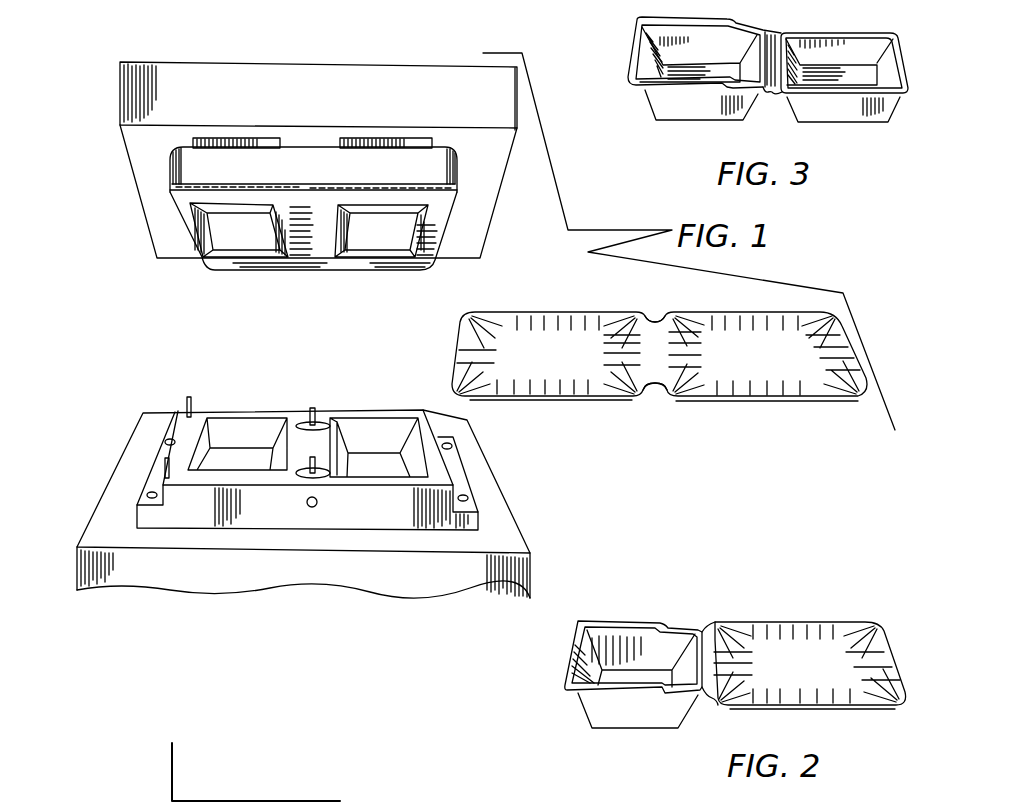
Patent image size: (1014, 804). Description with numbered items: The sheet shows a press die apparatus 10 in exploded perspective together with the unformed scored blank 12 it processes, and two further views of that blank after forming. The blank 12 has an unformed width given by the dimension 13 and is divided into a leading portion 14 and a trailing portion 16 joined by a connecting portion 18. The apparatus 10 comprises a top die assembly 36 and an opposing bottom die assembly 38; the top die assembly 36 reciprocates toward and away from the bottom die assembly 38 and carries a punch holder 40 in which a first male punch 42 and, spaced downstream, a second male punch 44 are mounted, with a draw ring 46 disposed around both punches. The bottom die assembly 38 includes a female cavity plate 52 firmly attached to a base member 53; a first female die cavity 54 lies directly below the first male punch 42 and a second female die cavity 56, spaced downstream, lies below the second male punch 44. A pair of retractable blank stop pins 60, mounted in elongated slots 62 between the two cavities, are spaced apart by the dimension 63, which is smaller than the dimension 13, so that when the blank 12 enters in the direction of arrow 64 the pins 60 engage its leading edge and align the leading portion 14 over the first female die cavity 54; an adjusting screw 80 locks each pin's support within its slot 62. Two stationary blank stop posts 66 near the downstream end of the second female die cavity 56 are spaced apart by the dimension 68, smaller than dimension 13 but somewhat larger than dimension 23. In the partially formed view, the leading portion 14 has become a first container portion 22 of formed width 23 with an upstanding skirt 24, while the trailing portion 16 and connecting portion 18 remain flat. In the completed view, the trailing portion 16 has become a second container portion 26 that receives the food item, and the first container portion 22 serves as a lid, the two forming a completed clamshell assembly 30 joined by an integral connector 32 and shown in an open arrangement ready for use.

In FIG. 1, the press die apparatus 10 is at (92, 172).
In FIG. 1, the unformed scored blank 12 is at (659, 385).
In FIG. 1, the unformed width dimension 13 is at (432, 396).
In FIG. 1, the leading portion 14 is at (580, 404).
In FIG. 1, the trailing portion 16 is at (762, 404).
In FIG. 2, the trailing portion 16 is at (843, 708).
In FIG. 1, the connecting portion 18 is at (660, 398).
In FIG. 2, the connecting portion 18 is at (707, 698).
In FIG. 3, the first container portion 22 is at (675, 105).
In FIG. 2, the first container portion 22 is at (608, 708).
In FIG. 2, the formed width dimension 23 is at (500, 623).
In FIG. 3, the upstanding skirt 24 is at (647, 20).
In FIG. 2, the upstanding skirt 24 is at (633, 623).
In FIG. 3, the second container portion 26 is at (860, 108).
In FIG. 3, the completed clamshell assembly 30 is at (771, 80).
In FIG. 3, the integral connector 32 is at (768, 100).
In FIG. 1, the top die assembly 36 is at (388, 63).
In FIG. 1, the bottom die assembly 38 is at (158, 598).
In FIG. 1, the punch holder 40 is at (145, 98).
In FIG. 1, the first male punch 42 is at (370, 242).
In FIG. 1, the second male punch 44 is at (248, 237).
In FIG. 1, the draw ring 46 is at (193, 252).
In FIG. 1, the female cavity plate 52 is at (407, 522).
In FIG. 1, the base member 53 is at (512, 542).
In FIG. 1, the first female die cavity 54 is at (420, 462).
In FIG. 1, the second female die cavity 56 is at (270, 462).
In FIG. 1, the retractable blank stop pins 60 is at (450, 445).
In FIG. 1, the elongated slots 62 is at (303, 420).
In FIG. 1, the pin spacing dimension 63 is at (125, 427).
In FIG. 1, the arrow 64 is at (493, 445).
In FIG. 1, the stationary blank stop posts 66 is at (186, 404).
In FIG. 1, the post spacing dimension 68 is at (180, 468).
In FIG. 1, the adjusting screw 80 is at (317, 505).